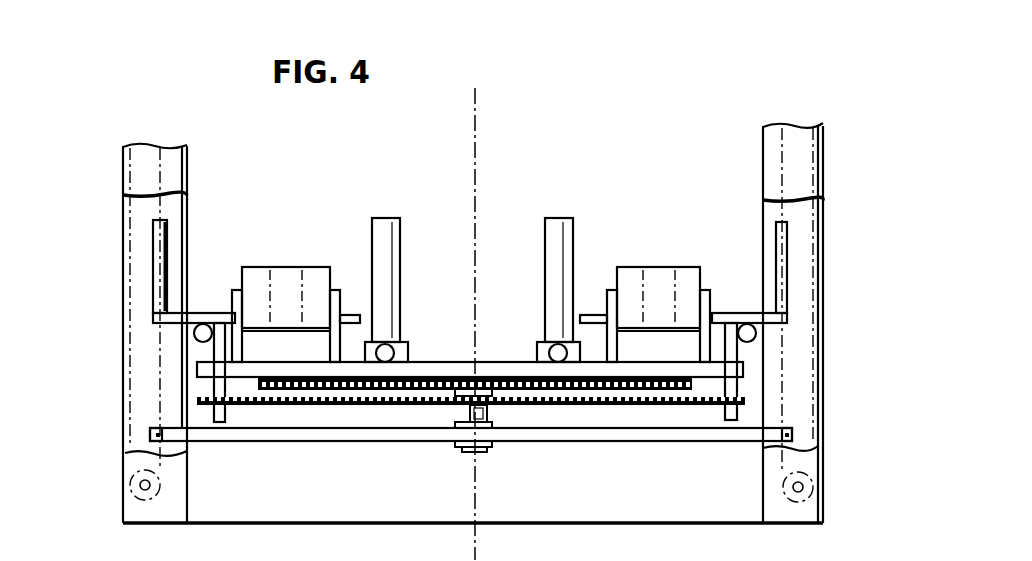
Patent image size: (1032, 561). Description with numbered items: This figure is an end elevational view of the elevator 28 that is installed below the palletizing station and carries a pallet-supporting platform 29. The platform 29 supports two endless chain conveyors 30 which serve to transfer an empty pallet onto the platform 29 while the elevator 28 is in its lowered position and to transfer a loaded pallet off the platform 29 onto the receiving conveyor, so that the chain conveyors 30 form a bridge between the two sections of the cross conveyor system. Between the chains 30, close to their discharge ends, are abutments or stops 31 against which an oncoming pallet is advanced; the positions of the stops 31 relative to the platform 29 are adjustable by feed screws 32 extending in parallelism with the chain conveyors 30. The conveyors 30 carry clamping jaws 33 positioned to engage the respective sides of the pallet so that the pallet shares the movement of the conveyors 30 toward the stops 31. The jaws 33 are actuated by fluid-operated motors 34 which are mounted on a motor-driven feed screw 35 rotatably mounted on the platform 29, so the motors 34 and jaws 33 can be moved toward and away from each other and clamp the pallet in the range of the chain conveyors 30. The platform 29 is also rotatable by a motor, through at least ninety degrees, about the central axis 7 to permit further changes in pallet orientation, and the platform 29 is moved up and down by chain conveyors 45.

The axis 7 is at (475, 456).
The elevator 28 is at (836, 200).
The platform 29 is at (713, 369).
The endless chain conveyors 30 is at (287, 292).
The stops 31 is at (386, 286).
The feed screws 32 is at (385, 362).
The clamping jaws 33 is at (158, 273).
The fluid-operated motors 34 is at (200, 323).
The feed screw 35 is at (683, 406).
The chain conveyors 45 is at (130, 400).